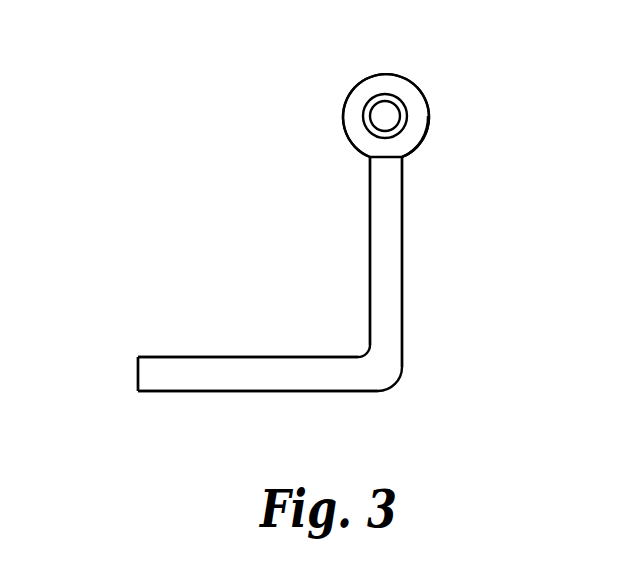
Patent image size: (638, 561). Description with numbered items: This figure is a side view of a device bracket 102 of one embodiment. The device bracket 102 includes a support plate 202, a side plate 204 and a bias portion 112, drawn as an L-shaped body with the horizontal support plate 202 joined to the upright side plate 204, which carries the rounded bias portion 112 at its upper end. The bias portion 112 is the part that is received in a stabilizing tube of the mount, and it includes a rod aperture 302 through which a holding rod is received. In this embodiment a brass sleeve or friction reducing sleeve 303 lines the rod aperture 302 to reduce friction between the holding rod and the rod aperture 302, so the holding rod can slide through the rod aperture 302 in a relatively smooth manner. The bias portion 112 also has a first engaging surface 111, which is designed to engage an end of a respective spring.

The device bracket 102 is at (207, 88).
The first engaging surface 111 is at (372, 90).
The bias portion 112 is at (428, 115).
The rod aperture 302 is at (388, 108).
The friction reducing sleeve 303 is at (402, 130).
The support plate 202 is at (205, 357).
The side plate 204 is at (392, 252).